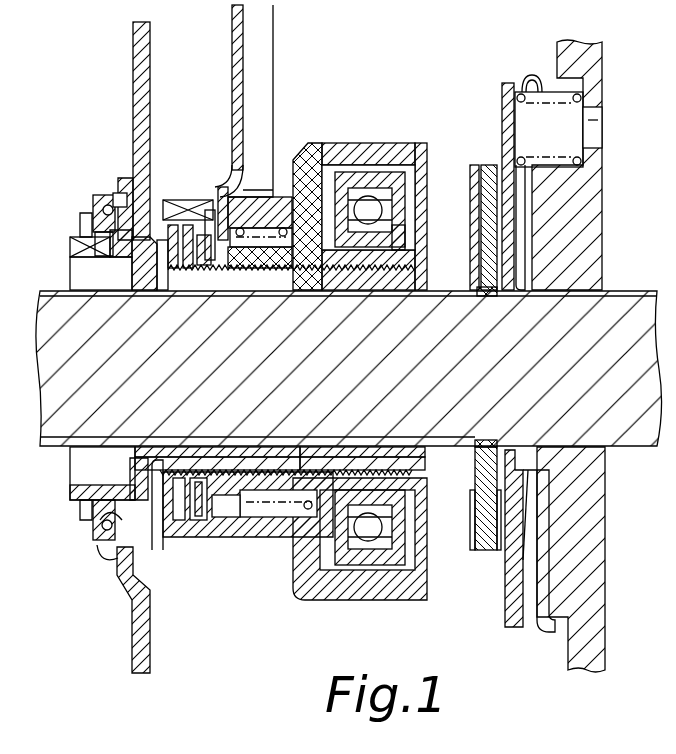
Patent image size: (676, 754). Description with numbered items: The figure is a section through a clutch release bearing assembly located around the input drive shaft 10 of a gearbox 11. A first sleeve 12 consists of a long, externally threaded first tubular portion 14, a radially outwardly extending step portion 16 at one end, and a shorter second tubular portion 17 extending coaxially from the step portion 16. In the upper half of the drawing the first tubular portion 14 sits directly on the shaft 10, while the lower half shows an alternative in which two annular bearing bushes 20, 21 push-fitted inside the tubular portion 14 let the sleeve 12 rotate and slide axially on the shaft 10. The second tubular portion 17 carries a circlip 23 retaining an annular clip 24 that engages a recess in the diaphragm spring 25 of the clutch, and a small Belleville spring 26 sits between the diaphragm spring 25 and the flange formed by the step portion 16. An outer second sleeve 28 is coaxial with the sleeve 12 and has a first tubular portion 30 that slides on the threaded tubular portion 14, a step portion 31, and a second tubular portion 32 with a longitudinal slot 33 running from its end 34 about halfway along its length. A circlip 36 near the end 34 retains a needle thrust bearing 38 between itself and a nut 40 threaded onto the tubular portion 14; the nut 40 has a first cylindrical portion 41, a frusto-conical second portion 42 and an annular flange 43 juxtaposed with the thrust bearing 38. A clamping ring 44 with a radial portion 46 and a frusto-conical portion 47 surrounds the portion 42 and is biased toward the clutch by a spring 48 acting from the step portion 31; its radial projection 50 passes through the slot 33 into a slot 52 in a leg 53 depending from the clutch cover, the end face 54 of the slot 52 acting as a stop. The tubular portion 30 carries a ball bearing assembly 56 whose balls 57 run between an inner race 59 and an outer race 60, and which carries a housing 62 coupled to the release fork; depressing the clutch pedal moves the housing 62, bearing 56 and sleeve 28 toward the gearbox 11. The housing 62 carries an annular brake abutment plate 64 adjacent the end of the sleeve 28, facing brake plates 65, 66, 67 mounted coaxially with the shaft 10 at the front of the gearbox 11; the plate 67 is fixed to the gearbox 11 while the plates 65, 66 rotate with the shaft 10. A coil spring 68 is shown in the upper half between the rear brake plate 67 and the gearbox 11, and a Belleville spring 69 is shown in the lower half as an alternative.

The input drive shaft 10 is at (67, 310).
The gearbox 11 is at (578, 197).
The first sleeve 12 is at (190, 278).
The first tubular portion 14 is at (320, 272).
The step portion 16 is at (133, 263).
The second tubular portion 17 is at (90, 493).
The annular bearing bush 20 is at (197, 452).
The annular bearing bush 21 is at (327, 450).
The circlip 23 is at (87, 217).
The annular clip 24 is at (107, 200).
The diaphragm spring 25 is at (145, 78).
The Belleville spring 26 is at (137, 215).
The outer second sleeve 28 is at (317, 157).
The first tubular portion 30 is at (383, 263).
The step portion 31 is at (320, 263).
The second tubular portion 32 is at (185, 203).
The longitudinal slot 33 is at (300, 232).
The end 34 is at (160, 265).
The circlip 36 is at (155, 280).
The needle thrust bearing 38 is at (207, 253).
The nut 40 is at (273, 263).
The first cylindrical portion 41 is at (250, 263).
The frusto-conical second portion 42 is at (220, 253).
The annular flange 43 is at (205, 215).
The clamping ring 44 is at (213, 510).
The radial portion 46 is at (223, 513).
The frusto-conical portion 47 is at (247, 513).
The spring 48 is at (293, 510).
The radial projection 50 is at (228, 182).
The slot 52 is at (272, 207).
The leg 53 is at (237, 75).
The end face 54 is at (212, 185).
The ball bearing assembly 56 is at (385, 182).
The balls 57 is at (372, 210).
The inner race 59 is at (392, 233).
The outer race 60 is at (380, 173).
The housing 62 is at (353, 183).
The annular brake abutment plate 64 is at (425, 153).
The brake plate 65 is at (477, 266).
The brake plate 66 is at (523, 267).
The rear brake plate 67 is at (507, 217).
The coil spring 68 is at (540, 93).
The Belleville spring 69 is at (527, 527).